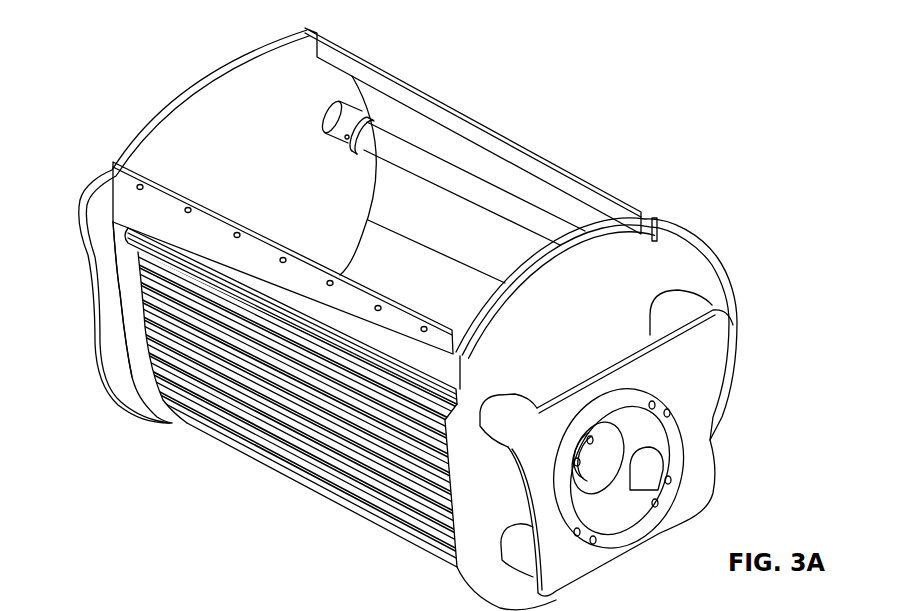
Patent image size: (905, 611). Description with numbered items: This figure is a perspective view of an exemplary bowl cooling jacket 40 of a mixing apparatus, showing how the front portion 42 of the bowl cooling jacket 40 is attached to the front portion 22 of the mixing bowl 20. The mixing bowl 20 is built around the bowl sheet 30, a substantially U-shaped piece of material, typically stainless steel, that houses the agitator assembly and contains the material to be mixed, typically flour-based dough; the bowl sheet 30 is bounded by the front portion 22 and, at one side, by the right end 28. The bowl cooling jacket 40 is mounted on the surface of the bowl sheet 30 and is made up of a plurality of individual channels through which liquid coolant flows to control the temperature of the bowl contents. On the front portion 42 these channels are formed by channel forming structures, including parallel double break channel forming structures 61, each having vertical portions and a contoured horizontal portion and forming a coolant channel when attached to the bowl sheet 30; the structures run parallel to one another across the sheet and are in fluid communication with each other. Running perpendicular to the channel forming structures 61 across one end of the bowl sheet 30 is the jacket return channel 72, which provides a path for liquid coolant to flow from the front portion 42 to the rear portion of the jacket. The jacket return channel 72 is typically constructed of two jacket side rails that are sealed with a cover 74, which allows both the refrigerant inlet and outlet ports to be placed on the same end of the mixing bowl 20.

The mixing bowl 20 is at (686, 151).
The front portion 22 is at (131, 400).
The right end 28 is at (604, 337).
The bowl sheet 30 is at (127, 197).
The bowl cooling jacket 40 is at (407, 545).
The front portion of bowl cooling jacket 42 is at (229, 420).
The double break channel forming structure 61 is at (115, 236).
The jacket return channel 72 is at (120, 293).
The cover 74 is at (135, 297).